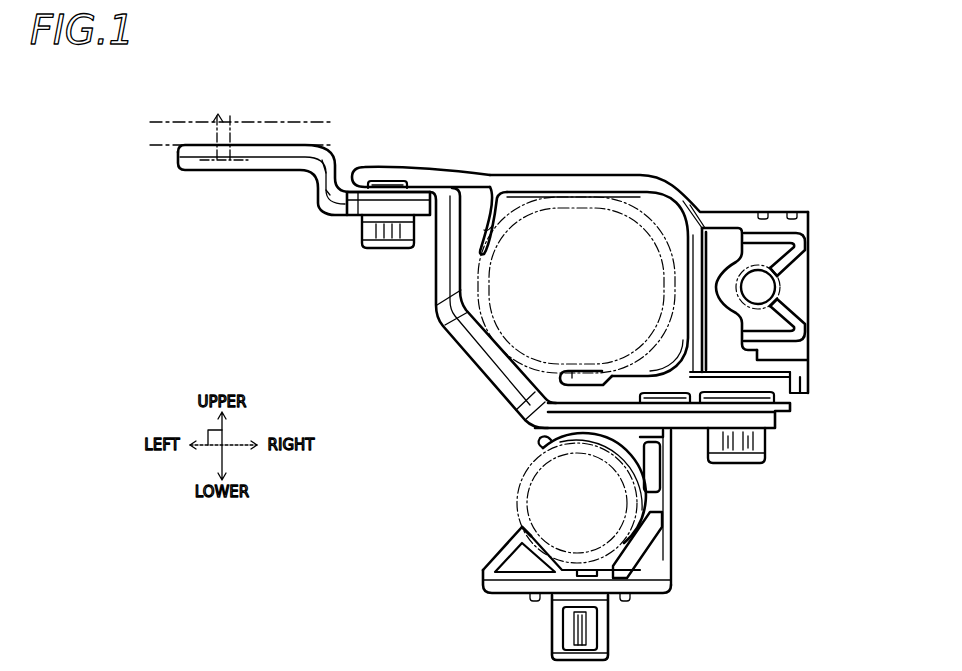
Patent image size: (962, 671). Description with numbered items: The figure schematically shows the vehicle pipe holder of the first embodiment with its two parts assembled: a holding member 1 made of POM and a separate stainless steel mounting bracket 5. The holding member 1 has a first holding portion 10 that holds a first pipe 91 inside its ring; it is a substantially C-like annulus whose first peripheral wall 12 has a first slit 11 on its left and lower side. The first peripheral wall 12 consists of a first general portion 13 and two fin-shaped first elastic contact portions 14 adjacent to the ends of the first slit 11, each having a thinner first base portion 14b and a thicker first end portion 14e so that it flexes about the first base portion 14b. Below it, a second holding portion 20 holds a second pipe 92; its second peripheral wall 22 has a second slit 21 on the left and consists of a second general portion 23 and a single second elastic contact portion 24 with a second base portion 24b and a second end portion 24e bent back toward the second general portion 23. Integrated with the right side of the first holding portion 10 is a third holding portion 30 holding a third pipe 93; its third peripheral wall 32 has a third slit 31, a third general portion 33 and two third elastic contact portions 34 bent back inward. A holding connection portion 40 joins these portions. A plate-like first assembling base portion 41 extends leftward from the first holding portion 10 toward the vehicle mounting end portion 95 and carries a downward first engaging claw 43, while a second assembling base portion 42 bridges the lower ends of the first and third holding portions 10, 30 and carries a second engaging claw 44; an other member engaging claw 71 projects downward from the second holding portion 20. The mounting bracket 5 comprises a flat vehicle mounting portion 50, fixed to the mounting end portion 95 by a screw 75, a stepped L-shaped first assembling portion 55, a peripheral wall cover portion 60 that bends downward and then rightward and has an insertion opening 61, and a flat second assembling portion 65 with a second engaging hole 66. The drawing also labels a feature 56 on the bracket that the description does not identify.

The holding member 1 is at (651, 149).
The mounting bracket 5 is at (251, 187).
The first holding portion 10 is at (547, 178).
The first slit 11 is at (456, 348).
The first peripheral wall 12 is at (528, 183).
The first general portion 13 is at (653, 356).
The first elastic contact portion 14 is at (498, 228).
The first base portion 14b is at (481, 210).
The first end portion 14e is at (440, 288).
The second holding portion 20 is at (673, 566).
The second slit 21 is at (523, 456).
The second peripheral wall 22 is at (646, 547).
The second general portion 23 is at (512, 588).
The second elastic contact portion 24 is at (505, 540).
The second base portion 24b is at (485, 576).
The second end portion 24e is at (527, 528).
The third holding portion 30 is at (742, 213).
The third slit 31 is at (822, 262).
The third peripheral wall 32 is at (778, 336).
The third general portion 33 is at (803, 350).
The third elastic contact portion 34 is at (790, 247).
The holding connection portion 40 is at (687, 441).
The first assembling base portion 41 is at (412, 170).
The second assembling base portion 42 is at (776, 383).
The first engaging claw 43 is at (386, 248).
The second engaging claw 44 is at (762, 447).
The vehicle mounting portion 50 is at (258, 150).
The first assembling portion 55 is at (352, 207).
The positioning protrusion 56 is at (390, 183).
The peripheral wall cover portion 60 is at (490, 372).
The insertion opening 61 is at (658, 362).
The second assembling portion 65 is at (735, 408).
The second engaging hole 66 is at (762, 374).
The other member engaging claw 71 is at (605, 627).
The screw 75 is at (217, 132).
The first pipe 91 is at (595, 198).
The second pipe 92 is at (512, 480).
The third pipe 93 is at (784, 286).
The mounting end portion 95 is at (253, 122).